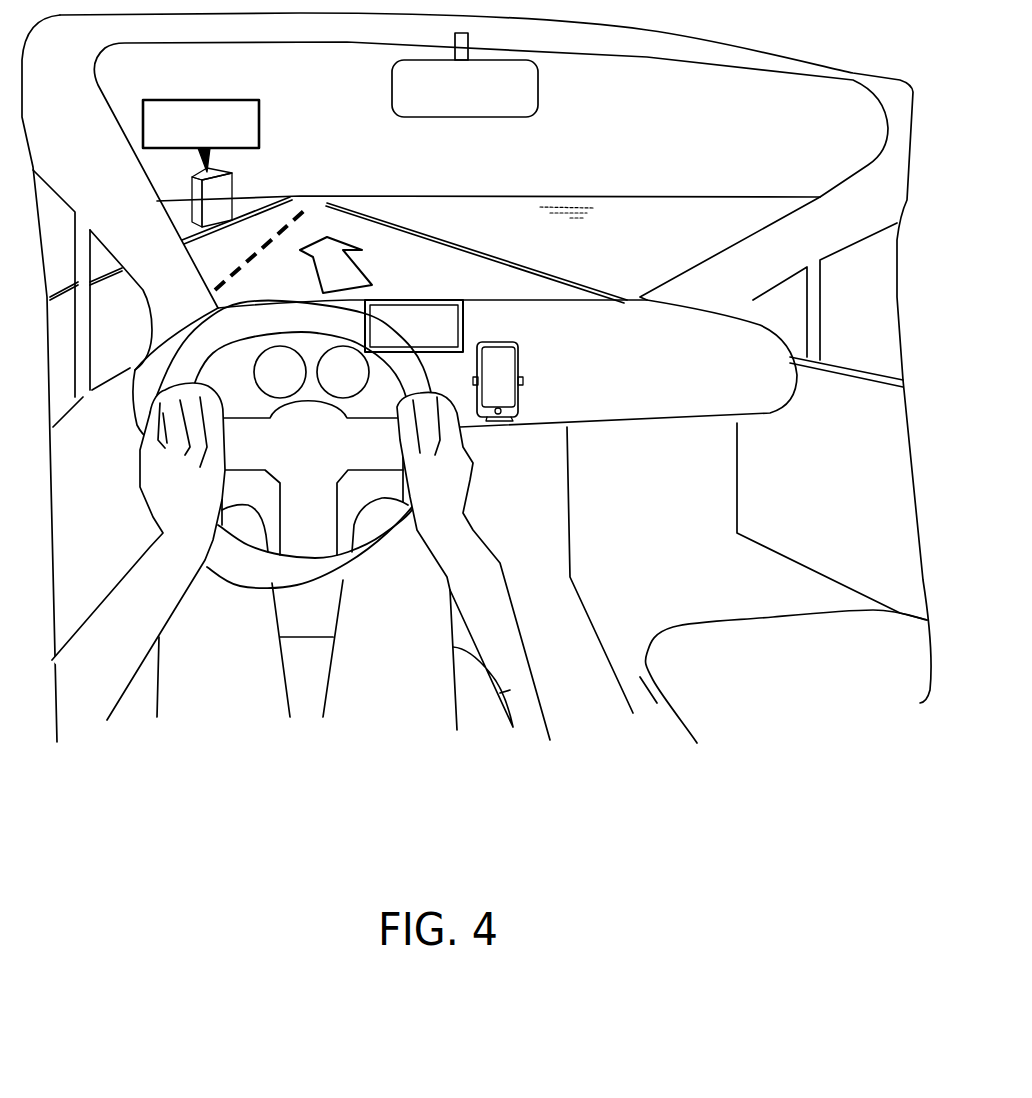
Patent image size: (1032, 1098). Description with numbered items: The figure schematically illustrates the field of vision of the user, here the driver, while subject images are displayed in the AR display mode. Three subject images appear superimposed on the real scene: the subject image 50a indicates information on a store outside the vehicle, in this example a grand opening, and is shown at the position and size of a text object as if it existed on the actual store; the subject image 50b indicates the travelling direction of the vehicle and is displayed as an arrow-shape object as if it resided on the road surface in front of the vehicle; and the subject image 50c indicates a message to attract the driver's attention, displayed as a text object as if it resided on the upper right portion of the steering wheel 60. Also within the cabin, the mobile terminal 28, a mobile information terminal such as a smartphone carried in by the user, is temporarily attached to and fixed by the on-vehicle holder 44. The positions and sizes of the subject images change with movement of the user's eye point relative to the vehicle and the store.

The subject image 50a is at (200, 100).
The subject image 50b is at (319, 279).
The subject image 50c is at (418, 300).
The mobile terminal 28 is at (510, 365).
The on-vehicle holder 44 is at (500, 423).
The steering wheel 60 is at (247, 570).